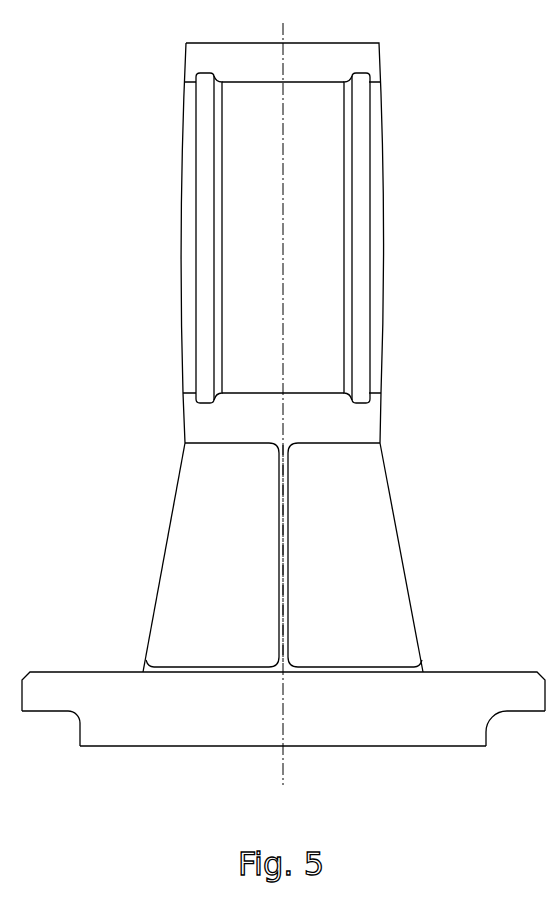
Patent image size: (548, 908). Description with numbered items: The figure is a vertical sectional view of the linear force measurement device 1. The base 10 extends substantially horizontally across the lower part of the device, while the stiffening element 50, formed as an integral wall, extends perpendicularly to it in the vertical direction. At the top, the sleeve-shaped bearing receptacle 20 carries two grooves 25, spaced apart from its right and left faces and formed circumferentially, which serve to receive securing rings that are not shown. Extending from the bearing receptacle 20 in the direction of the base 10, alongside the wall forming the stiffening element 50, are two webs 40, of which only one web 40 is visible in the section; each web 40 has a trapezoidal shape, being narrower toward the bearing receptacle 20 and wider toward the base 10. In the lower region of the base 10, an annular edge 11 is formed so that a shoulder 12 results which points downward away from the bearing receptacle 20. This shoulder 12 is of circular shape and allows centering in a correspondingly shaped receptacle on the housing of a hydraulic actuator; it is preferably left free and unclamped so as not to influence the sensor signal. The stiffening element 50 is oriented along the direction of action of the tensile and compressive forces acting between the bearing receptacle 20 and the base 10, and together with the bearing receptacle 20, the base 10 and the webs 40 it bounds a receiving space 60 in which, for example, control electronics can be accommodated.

The linear force measurement device 1 is at (413, 277).
The bearing receptacle 20 is at (366, 57).
The grooves 25 is at (364, 82).
The receiving space 60 is at (196, 585).
The web 40 is at (364, 545).
The stiffening element 50 is at (286, 469).
The base 10 is at (453, 698).
The shoulder 12 is at (119, 725).
The annular edge 11 is at (512, 724).